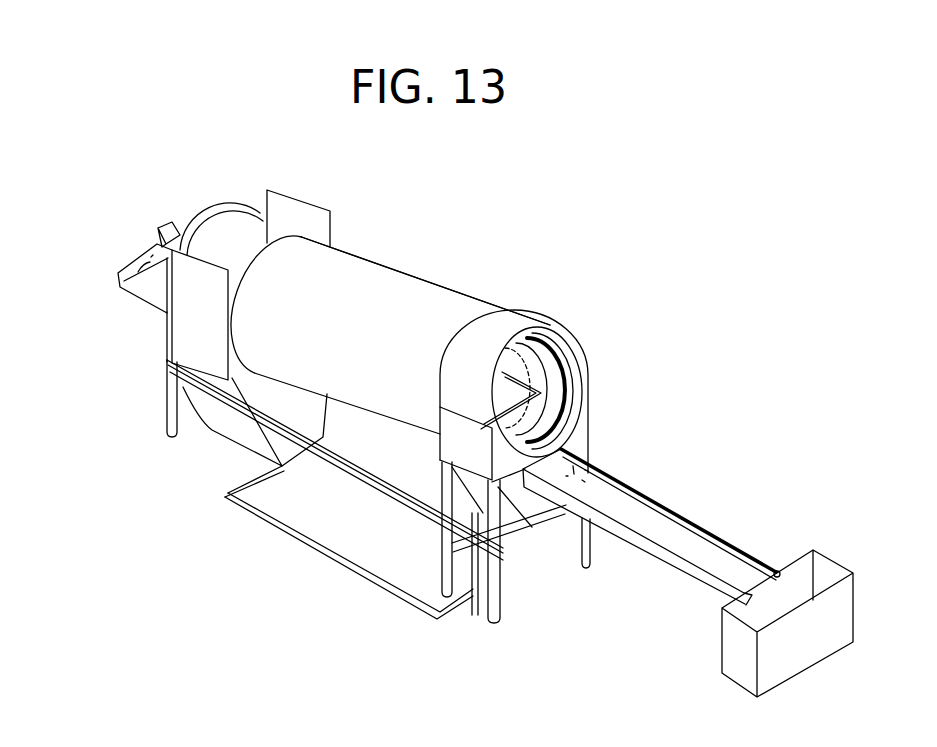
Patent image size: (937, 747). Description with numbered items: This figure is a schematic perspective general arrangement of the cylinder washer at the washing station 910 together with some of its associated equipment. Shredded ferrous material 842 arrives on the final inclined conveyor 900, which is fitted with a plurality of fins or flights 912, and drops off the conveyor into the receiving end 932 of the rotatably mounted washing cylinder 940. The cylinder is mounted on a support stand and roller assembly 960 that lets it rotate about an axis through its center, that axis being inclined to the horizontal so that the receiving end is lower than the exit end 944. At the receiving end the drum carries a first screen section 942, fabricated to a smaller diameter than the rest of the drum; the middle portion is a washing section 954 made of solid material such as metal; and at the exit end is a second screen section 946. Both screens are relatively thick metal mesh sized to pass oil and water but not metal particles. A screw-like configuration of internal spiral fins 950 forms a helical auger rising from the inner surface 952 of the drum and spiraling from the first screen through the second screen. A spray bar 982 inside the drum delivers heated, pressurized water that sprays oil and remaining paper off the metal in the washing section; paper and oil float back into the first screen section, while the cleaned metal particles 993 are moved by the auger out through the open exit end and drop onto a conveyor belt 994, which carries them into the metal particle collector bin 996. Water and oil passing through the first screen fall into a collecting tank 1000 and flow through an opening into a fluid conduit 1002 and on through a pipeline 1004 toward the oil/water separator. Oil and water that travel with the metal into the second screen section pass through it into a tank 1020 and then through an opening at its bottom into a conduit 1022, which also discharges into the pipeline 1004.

The washing station 910 is at (452, 202).
The washing cylinder 940 is at (430, 281).
The washing section 954 is at (361, 262).
The first screen section 942 is at (231, 234).
The receiving end 932 is at (189, 170).
The final inclined conveyor 900 is at (173, 226).
The fins or flights 912 is at (138, 259).
The ferrous material 842 is at (150, 268).
The collecting tank 1000 is at (245, 433).
The fluid conduit 1002 is at (262, 484).
The pipeline 1004 is at (222, 499).
The exit end 944 is at (600, 338).
The second screen section 946 is at (544, 313).
The inner surface 952 is at (578, 373).
The internal spiral fins 950 is at (568, 405).
The spray bar 982 is at (586, 420).
The conveyor belt 994 is at (740, 538).
The cleaned metal particles 993 is at (583, 482).
The tank 1020 is at (525, 509).
The support stand and roller assembly 960 is at (507, 606).
The conduit 1022 is at (473, 614).
The metal particle collector bin 996 is at (720, 652).